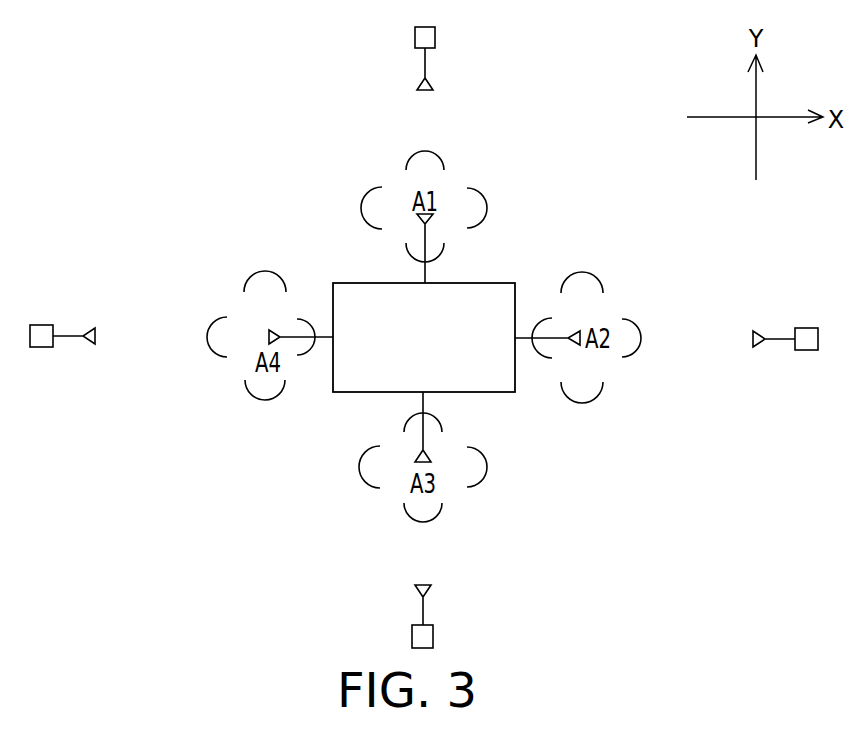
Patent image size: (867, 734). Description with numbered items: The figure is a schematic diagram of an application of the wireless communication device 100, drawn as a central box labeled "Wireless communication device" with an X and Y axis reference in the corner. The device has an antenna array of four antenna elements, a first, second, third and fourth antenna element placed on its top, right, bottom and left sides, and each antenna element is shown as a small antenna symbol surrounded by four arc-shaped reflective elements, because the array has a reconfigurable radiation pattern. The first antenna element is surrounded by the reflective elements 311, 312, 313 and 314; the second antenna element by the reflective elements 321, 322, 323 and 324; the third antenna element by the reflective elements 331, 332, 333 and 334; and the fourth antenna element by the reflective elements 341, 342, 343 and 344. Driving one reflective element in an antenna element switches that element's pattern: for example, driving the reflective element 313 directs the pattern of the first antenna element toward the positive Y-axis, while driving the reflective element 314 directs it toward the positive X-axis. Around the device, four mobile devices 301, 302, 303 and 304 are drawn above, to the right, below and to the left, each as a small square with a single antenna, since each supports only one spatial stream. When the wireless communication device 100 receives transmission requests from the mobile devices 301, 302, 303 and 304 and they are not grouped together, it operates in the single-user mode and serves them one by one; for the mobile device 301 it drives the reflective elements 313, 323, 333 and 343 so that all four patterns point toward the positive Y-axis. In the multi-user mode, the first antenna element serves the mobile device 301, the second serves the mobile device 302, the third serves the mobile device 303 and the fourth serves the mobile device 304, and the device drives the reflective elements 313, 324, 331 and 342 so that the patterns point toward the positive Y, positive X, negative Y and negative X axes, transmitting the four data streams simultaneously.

The wireless communication device 100 is at (515, 287).
The mobile device 301 is at (435, 38).
The mobile device 302 is at (805, 328).
The mobile device 303 is at (435, 638).
The mobile device 304 is at (42, 325).
The reflective element 311 is at (438, 155).
The reflective element 312 is at (490, 210).
The reflective element 313 is at (438, 252).
The reflective element 314 is at (370, 188).
The reflective element 321 is at (593, 272).
The reflective element 322 is at (640, 330).
The reflective element 323 is at (595, 398).
The reflective element 324 is at (537, 353).
The reflective element 331 is at (438, 423).
The reflective element 332 is at (487, 465).
The reflective element 333 is at (437, 520).
The reflective element 334 is at (370, 488).
The reflective element 341 is at (257, 272).
The reflective element 342 is at (312, 352).
The reflective element 343 is at (253, 397).
The reflective element 344 is at (208, 330).